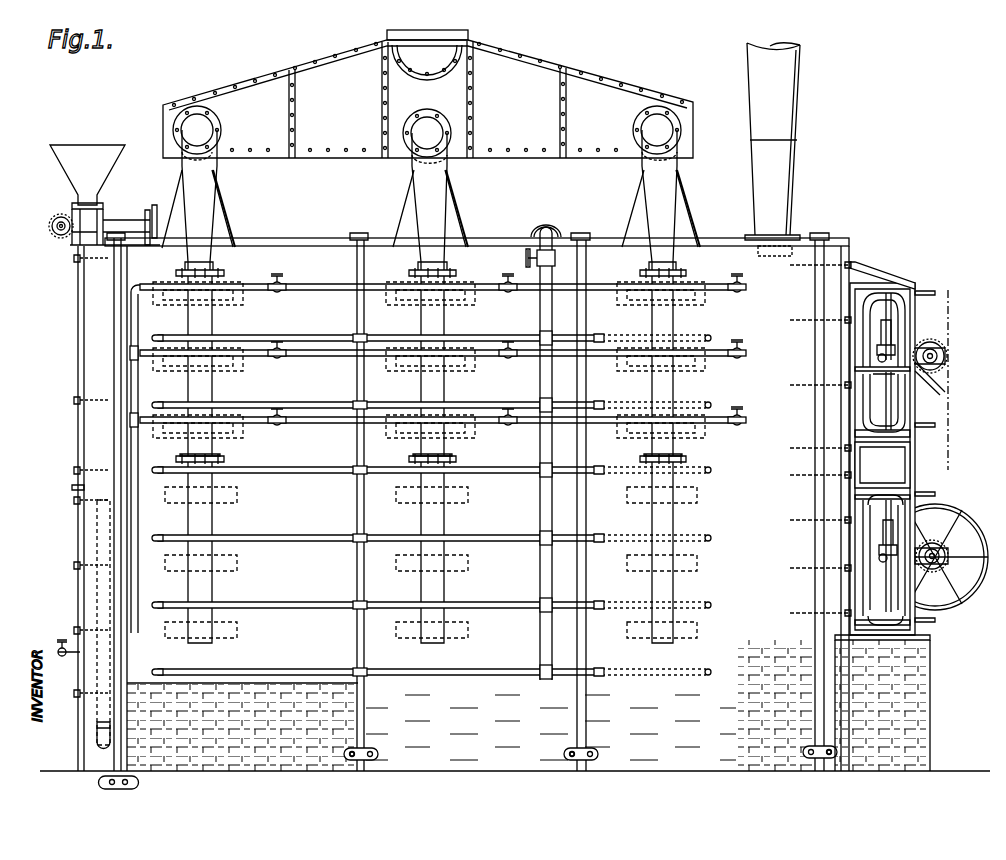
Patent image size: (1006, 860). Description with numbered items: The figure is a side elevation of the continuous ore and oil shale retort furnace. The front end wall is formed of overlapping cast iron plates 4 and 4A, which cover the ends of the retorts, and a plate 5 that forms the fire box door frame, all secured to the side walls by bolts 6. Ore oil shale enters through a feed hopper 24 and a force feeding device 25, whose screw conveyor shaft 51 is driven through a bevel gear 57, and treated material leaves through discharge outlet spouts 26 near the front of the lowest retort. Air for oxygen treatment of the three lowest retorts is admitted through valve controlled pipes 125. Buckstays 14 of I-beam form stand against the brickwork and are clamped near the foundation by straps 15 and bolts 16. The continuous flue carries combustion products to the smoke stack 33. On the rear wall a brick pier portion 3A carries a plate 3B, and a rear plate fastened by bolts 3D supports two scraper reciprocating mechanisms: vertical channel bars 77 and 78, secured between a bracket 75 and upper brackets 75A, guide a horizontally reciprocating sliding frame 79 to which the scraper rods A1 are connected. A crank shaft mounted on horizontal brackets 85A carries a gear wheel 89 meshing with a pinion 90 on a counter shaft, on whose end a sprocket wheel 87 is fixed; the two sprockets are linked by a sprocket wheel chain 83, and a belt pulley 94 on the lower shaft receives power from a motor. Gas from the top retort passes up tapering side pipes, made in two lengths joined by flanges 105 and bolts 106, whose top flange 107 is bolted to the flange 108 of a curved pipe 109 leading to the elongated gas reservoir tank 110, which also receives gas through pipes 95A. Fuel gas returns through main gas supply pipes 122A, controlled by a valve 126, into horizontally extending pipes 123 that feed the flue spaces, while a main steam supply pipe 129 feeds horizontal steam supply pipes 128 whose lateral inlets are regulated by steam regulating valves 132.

The elongated gas reservoir tank 110 is at (340, 108).
The curved pipe 109 is at (212, 203).
The pipes 95A is at (222, 222).
The flange 108 is at (214, 266).
The flange 107 is at (226, 276).
The main steam supply pipe 129 is at (140, 600).
The steam supply pipes 128 is at (316, 286).
The steam regulating valve 132 is at (278, 275).
The horizontally extending pipes 123 is at (300, 336).
The flanges 105 is at (226, 460).
The bolts 106 is at (178, 456).
The buckstays 14 is at (114, 302).
The main gas supply pipes 122A is at (540, 310).
The valve 126 is at (525, 258).
The straps 15 is at (370, 754).
The bolts 16 is at (352, 754).
The feed hopper 24 is at (87, 165).
The bevel gear 57 is at (52, 222).
The force feeding device 25 is at (115, 222).
The shaft 51 is at (160, 220).
The cast iron plate 4 is at (78, 373).
The bolts 6 is at (74, 258).
The cast iron plate 4A is at (84, 551).
The valve controlled pipes 125 is at (70, 664).
The discharge outlet spouts 26 is at (97, 712).
The plate 5 is at (78, 738).
The smoke stack 33 is at (778, 96).
The channel bar 78 is at (915, 318).
The brackets 75A is at (882, 266).
The horizontal brackets 85A is at (858, 367).
The gear wheel 89 is at (870, 332).
The channel bar 77 is at (863, 422).
The horizontally reciprocating sliding frame 79 is at (898, 402).
The bracket 75 is at (882, 465).
The rods A1 is at (929, 293).
The pinion 90 is at (945, 348).
The sprocket wheel 87 is at (947, 356).
The sprocket wheel chain 83 is at (948, 454).
The belt pulley 94 is at (960, 520).
The bolts 3D is at (795, 270).
The plate 3B is at (930, 637).
The brick pier portion 3A is at (898, 705).